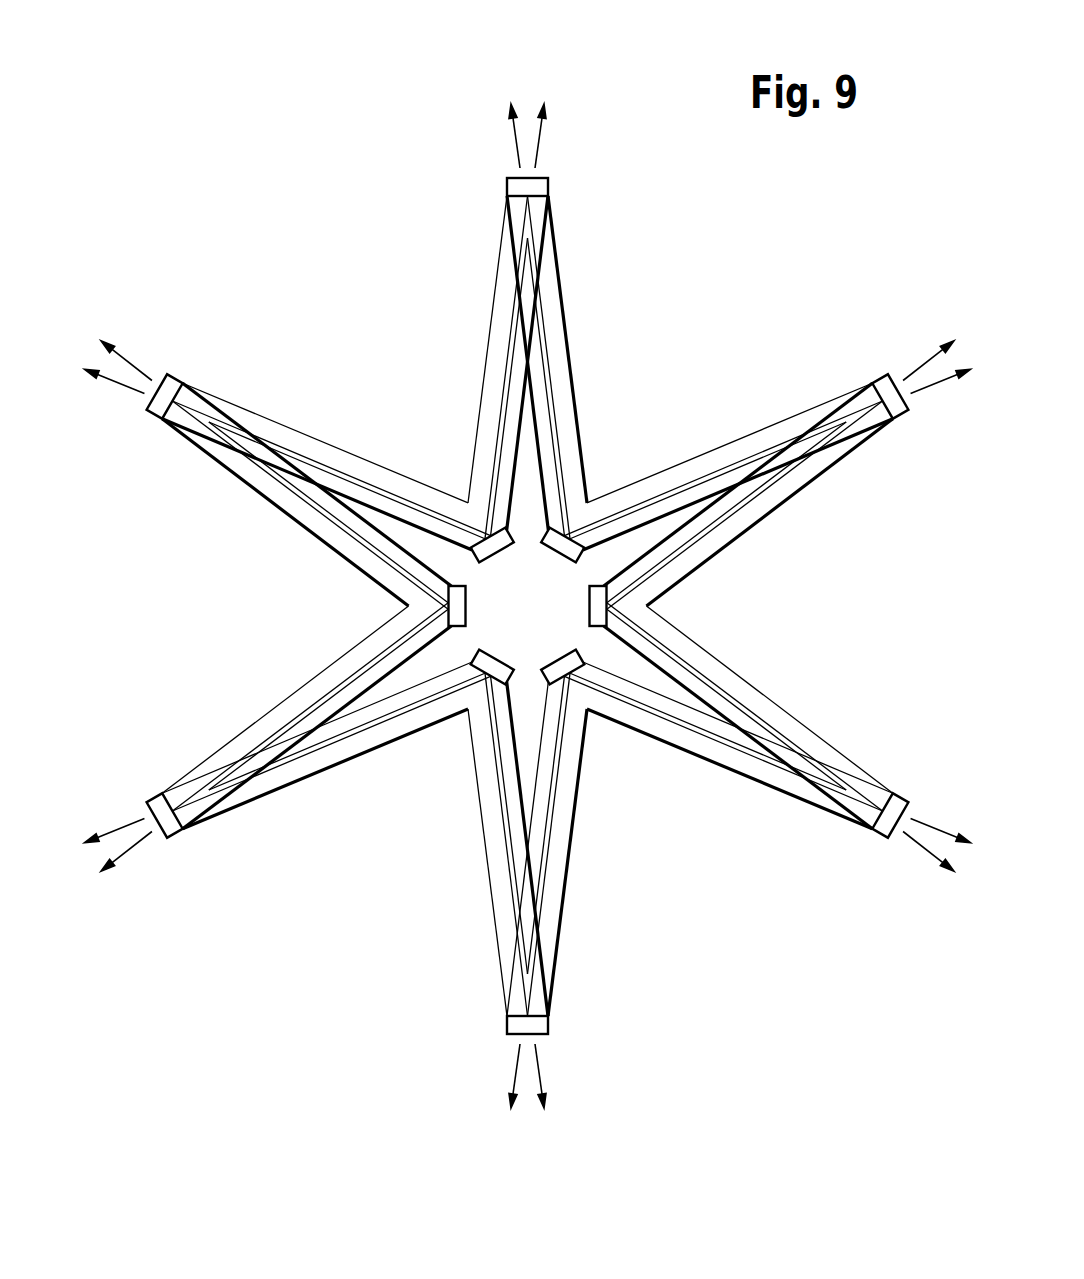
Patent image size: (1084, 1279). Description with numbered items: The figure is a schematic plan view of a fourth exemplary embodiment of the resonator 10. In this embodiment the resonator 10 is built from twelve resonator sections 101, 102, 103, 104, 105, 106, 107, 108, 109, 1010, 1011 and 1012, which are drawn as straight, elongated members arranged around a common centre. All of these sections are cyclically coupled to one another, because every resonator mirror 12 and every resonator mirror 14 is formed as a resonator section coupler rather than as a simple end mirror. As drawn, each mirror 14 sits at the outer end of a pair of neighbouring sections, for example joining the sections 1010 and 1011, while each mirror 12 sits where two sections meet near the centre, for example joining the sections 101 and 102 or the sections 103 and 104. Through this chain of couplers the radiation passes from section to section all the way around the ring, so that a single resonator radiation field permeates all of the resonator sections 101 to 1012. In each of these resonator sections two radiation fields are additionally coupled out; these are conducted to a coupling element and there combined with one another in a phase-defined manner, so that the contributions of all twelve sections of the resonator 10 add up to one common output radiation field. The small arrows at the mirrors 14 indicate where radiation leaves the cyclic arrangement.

The resonator 10 is at (322, 302).
The resonator section 101 is at (294, 493).
The resonator section 102 is at (276, 728).
The resonator section 103 is at (271, 772).
The resonator section 104 is at (517, 882).
The resonator section 105 is at (544, 917).
The resonator section 106 is at (767, 764).
The resonator section 107 is at (800, 752).
The resonator section 108 is at (790, 478).
The resonator section 109 is at (763, 459).
The resonator section 1010 is at (543, 343).
The resonator section 1011 is at (512, 323).
The resonator section 1012 is at (291, 453).
The resonator mirror 12 is at (462, 593).
The resonator mirror 14 is at (536, 186).